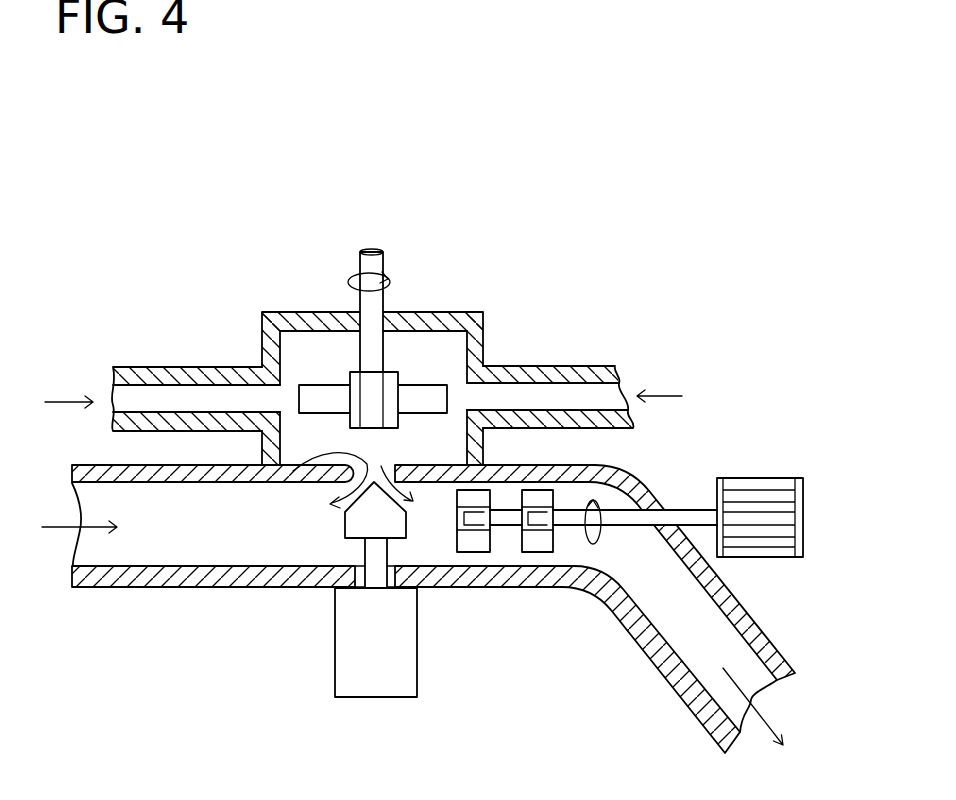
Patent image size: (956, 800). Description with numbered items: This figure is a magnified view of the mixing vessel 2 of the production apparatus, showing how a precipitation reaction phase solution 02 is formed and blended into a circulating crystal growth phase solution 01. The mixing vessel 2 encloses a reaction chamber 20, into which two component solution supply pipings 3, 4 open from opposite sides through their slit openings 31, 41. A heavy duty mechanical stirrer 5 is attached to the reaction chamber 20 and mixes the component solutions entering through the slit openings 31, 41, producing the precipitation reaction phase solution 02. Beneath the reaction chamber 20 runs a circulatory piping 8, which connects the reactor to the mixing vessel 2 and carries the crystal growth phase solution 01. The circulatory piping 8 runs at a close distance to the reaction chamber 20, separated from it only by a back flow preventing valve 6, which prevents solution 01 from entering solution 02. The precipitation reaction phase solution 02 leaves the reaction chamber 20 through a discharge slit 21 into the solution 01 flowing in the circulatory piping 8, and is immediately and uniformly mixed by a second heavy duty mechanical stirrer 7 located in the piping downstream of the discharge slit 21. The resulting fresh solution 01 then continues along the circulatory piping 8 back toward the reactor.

The mixing vessel 2 is at (303, 312).
The reaction chamber 20 is at (428, 343).
The discharge slit 21 is at (291, 476).
The component solution supply piping 3 is at (145, 366).
The slit opening 31 is at (257, 405).
The component solution supply piping 4 is at (578, 364).
The slit opening 41 is at (495, 395).
The heavy duty mechanical stirrer 5 is at (380, 263).
The back flow preventing valve 6 is at (335, 664).
The heavy duty mechanical stirrer 7 is at (686, 520).
The circulatory piping 8 is at (160, 589).
The crystal growth phase solution 01 is at (411, 647).
The precipitation reaction phase solution 02 is at (353, 485).